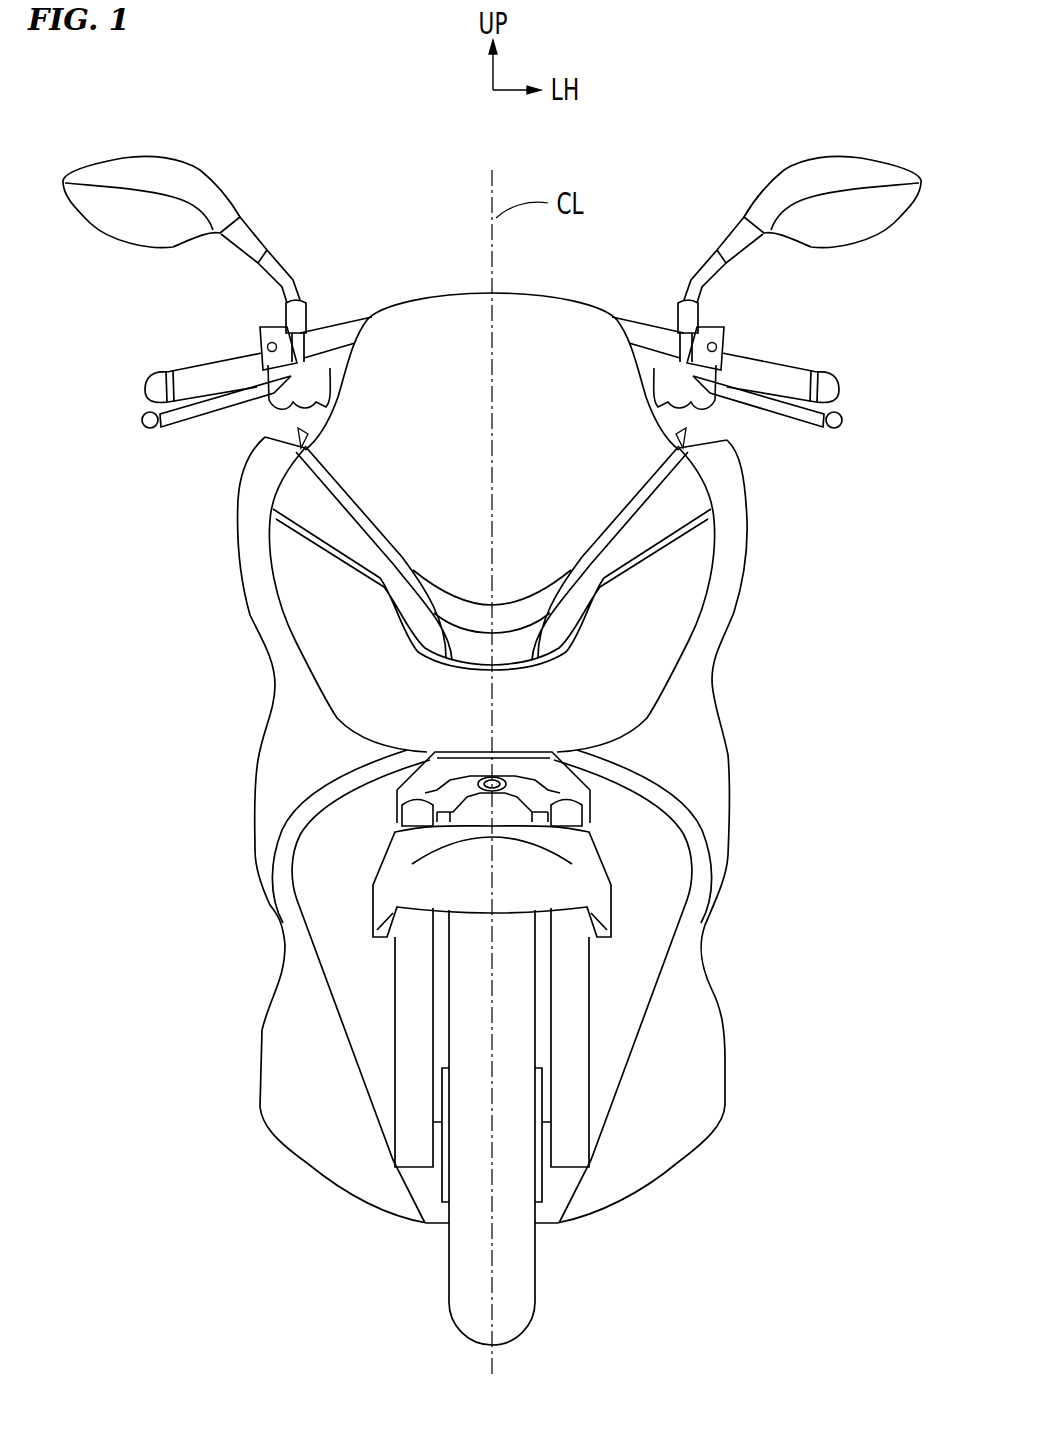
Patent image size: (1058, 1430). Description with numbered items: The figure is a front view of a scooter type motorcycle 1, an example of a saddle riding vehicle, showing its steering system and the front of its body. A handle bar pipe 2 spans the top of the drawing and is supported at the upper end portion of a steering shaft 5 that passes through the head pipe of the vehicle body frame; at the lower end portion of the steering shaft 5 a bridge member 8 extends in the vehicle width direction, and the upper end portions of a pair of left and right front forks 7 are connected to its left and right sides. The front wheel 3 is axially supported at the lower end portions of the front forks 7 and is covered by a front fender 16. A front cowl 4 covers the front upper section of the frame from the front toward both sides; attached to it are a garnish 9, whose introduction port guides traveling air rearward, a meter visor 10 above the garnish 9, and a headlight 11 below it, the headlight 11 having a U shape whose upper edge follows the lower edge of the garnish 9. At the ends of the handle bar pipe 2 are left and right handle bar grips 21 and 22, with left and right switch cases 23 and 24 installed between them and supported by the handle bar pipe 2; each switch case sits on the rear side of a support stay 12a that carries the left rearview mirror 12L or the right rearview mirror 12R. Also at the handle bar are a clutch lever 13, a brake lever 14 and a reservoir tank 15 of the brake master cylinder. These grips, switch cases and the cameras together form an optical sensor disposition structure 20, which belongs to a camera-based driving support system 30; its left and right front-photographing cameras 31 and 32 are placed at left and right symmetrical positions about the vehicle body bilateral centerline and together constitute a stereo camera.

The motorcycle 1 is at (690, 107).
The handle bar pipe 2 is at (640, 337).
The front wheel 3 is at (510, 1272).
The front cowl 4 is at (737, 537).
The steering shaft 5 is at (500, 790).
The front forks 7 is at (775, 1040).
The bridge member 8 is at (410, 785).
The garnish 9 is at (520, 615).
The meter visor 10 is at (444, 303).
The headlight 11 is at (622, 701).
The support stays 12a is at (678, 346).
The right rearview mirror 12R is at (152, 168).
The left rearview mirror 12L is at (833, 170).
The clutch lever 13 is at (800, 410).
The brake lever 14 is at (184, 410).
The reservoir tank of brake master cylinder 15 is at (352, 323).
The front fender 16 is at (583, 860).
The optical sensor disposition structure 20 is at (721, 324).
The left handle bar grip 21 is at (797, 370).
The right handle bar grip 22 is at (187, 370).
The left switch case 23 is at (702, 403).
The right switch case 24 is at (282, 403).
The driving support system 30 is at (263, 324).
The left front-photographing camera 31 is at (717, 347).
The right front-photographing camera 32 is at (267, 347).